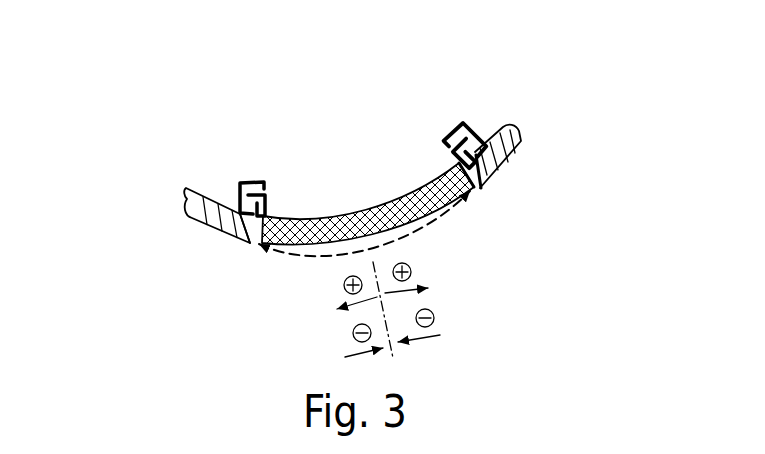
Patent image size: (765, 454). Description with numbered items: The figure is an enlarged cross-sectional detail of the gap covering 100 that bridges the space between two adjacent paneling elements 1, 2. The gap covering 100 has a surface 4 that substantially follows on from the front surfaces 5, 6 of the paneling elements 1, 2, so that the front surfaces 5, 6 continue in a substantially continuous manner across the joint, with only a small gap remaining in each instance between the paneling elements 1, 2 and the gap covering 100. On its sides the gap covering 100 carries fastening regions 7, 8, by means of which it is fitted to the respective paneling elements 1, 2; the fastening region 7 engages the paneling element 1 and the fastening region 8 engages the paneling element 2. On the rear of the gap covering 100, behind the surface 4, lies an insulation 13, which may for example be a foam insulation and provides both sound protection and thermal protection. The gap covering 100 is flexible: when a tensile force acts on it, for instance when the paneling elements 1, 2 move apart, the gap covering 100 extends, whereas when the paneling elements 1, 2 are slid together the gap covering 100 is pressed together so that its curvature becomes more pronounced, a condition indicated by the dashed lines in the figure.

The paneling element 1 is at (205, 192).
The paneling element 2 is at (502, 130).
The surface 4 is at (434, 214).
The front surface 5 is at (243, 246).
The front surface 6 is at (480, 189).
The fastening region 7 is at (254, 180).
The fastening region 8 is at (457, 128).
The insulation 13 is at (356, 213).
The gap covering 100 is at (318, 279).